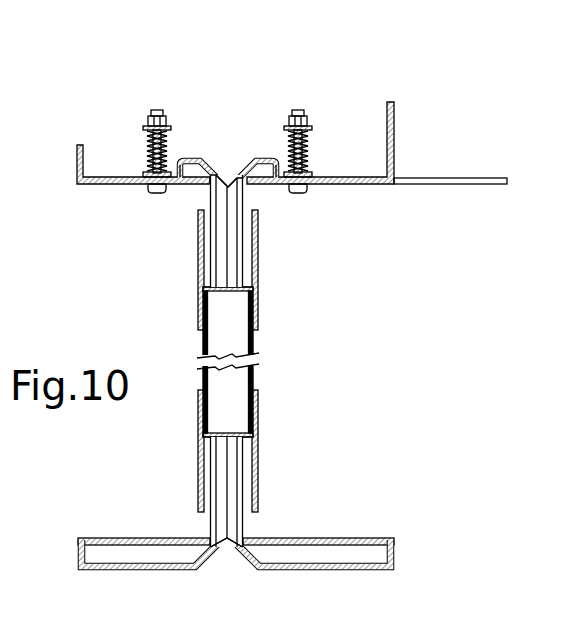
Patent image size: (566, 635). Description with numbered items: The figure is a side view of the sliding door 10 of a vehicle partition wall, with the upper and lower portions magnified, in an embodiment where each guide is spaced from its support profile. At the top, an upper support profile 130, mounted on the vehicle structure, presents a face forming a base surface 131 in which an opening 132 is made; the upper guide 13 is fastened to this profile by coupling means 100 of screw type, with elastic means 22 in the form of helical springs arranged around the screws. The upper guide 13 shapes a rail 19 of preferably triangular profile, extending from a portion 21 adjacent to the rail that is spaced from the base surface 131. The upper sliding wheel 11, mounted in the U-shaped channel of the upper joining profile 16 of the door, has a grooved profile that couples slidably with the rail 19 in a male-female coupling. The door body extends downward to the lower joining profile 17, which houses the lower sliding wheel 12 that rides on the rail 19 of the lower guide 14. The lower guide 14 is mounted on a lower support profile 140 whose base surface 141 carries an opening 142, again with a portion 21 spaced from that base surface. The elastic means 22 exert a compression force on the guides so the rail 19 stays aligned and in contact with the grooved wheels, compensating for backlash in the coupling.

The sliding door 10 is at (308, 374).
The sliding wheel 11 is at (240, 224).
The sliding wheel 12 is at (240, 471).
The upper guide 13 is at (219, 139).
The lower guide 14 is at (307, 565).
The upper joining profile 16 is at (258, 262).
The lower joining profile 17 is at (258, 453).
The rail 19 is at (236, 172).
The portion adjacent to the rail 21 is at (193, 157).
The elastic means 22 is at (148, 145).
The coupling means 100 is at (211, 109).
The upper support profile 130 is at (296, 177).
The base surface 131 is at (99, 187).
The opening 132 is at (210, 190).
The lower support profile 140 is at (305, 516).
The base surface 141 is at (158, 537).
The opening 142 is at (243, 534).